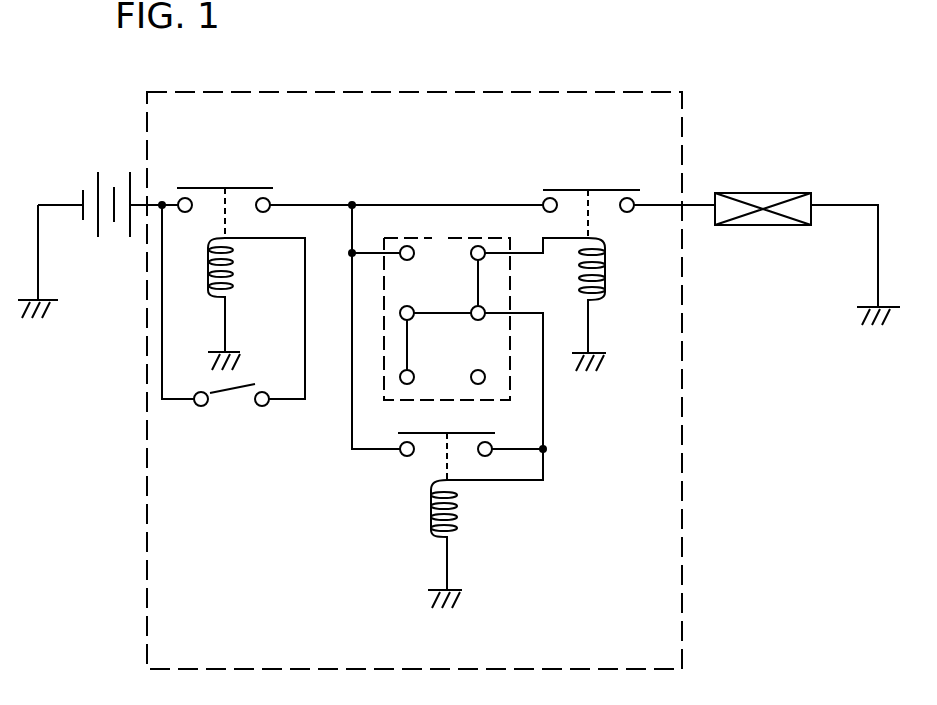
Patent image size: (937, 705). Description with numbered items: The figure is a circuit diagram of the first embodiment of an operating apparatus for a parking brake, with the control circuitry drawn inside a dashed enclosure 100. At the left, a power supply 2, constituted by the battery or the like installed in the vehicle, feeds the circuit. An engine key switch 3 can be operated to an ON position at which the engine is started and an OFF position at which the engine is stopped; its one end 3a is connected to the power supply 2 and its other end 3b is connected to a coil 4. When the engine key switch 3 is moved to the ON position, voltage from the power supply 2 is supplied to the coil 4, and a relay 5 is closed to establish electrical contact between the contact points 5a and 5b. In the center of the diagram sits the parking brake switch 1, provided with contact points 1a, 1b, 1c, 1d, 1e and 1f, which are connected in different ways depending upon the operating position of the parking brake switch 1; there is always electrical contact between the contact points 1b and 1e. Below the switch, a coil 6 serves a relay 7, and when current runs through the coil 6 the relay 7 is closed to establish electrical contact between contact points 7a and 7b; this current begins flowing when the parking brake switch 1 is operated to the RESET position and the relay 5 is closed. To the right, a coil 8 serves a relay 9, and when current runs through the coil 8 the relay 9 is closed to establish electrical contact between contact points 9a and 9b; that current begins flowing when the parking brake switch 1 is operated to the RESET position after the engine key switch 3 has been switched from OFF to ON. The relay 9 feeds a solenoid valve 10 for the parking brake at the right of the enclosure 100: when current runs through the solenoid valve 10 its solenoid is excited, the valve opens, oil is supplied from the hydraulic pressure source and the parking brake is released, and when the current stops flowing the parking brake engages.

The parking brake switch 1 is at (440, 238).
The contact point 1a is at (402, 248).
The contact point 1b is at (399, 315).
The contact point 1c is at (399, 380).
The contact point 1d is at (476, 247).
The contact point 1e is at (485, 309).
The contact point 1f is at (486, 377).
The power supply 2 is at (93, 188).
The engine key switch 3 is at (230, 397).
The one end of the engine key switch 3a is at (200, 407).
The other end of the engine key switch 3b is at (262, 407).
The coil 4 is at (240, 270).
The relay 5 is at (217, 188).
The contact point 5a is at (180, 198).
The contact point 5b is at (272, 202).
The coil 6 is at (460, 515).
The relay 7 is at (430, 440).
The contact point 7a is at (403, 457).
The contact point 7b is at (492, 455).
The coil 8 is at (606, 275).
The relay 9 is at (557, 190).
The contact point 9a is at (543, 200).
The contact point 9b is at (633, 200).
The solenoid valve for the parking brake 10 is at (737, 193).
The control circuit 100 is at (665, 640).